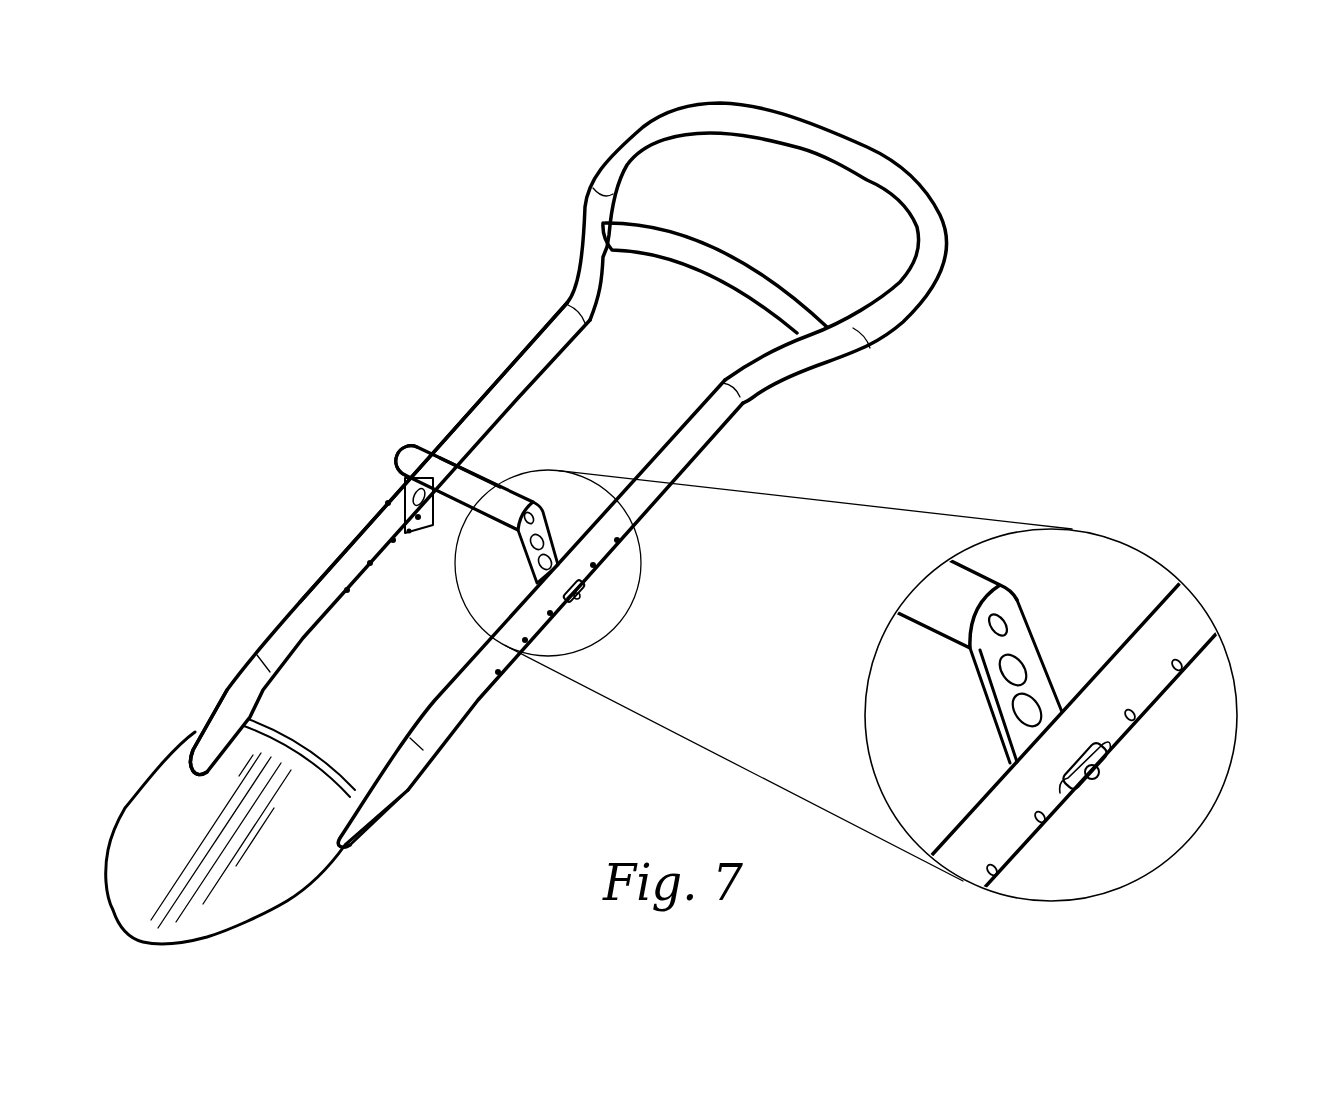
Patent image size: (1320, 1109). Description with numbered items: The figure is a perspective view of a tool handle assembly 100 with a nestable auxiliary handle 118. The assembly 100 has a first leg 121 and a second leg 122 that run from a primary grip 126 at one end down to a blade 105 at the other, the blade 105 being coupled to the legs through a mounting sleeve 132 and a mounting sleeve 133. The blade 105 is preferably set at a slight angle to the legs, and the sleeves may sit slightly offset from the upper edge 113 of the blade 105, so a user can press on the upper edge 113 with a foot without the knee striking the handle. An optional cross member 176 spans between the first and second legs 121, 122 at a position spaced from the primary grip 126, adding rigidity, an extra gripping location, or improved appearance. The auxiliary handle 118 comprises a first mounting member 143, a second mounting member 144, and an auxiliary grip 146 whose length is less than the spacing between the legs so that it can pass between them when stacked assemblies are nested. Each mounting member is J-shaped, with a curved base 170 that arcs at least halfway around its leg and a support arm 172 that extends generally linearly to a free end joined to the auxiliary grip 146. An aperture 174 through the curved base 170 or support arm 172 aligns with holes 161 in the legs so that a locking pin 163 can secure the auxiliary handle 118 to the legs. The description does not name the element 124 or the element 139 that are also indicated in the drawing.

The tool handle assembly 100 is at (280, 330).
The blade 105 is at (290, 897).
The upper edge 113 is at (307, 760).
The auxiliary handle 118 is at (477, 462).
The first leg 121 is at (272, 630).
The second leg 122 is at (438, 748).
The handle loop 124 is at (966, 254).
The primary grip 126 is at (905, 175).
The mounting sleeve 132 is at (222, 695).
The mounting sleeve 133 is at (410, 782).
The bar end cap 139 is at (440, 440).
The first mounting member 143 is at (395, 490).
The second mounting member 144 is at (520, 555).
The auxiliary grip 146 is at (493, 467).
The holes 161 is at (620, 540).
The locking pin 163 is at (582, 610).
The curved base 170 is at (570, 607).
The support arm 172 is at (553, 527).
The aperture 174 is at (600, 594).
The cross member 176 is at (723, 247).